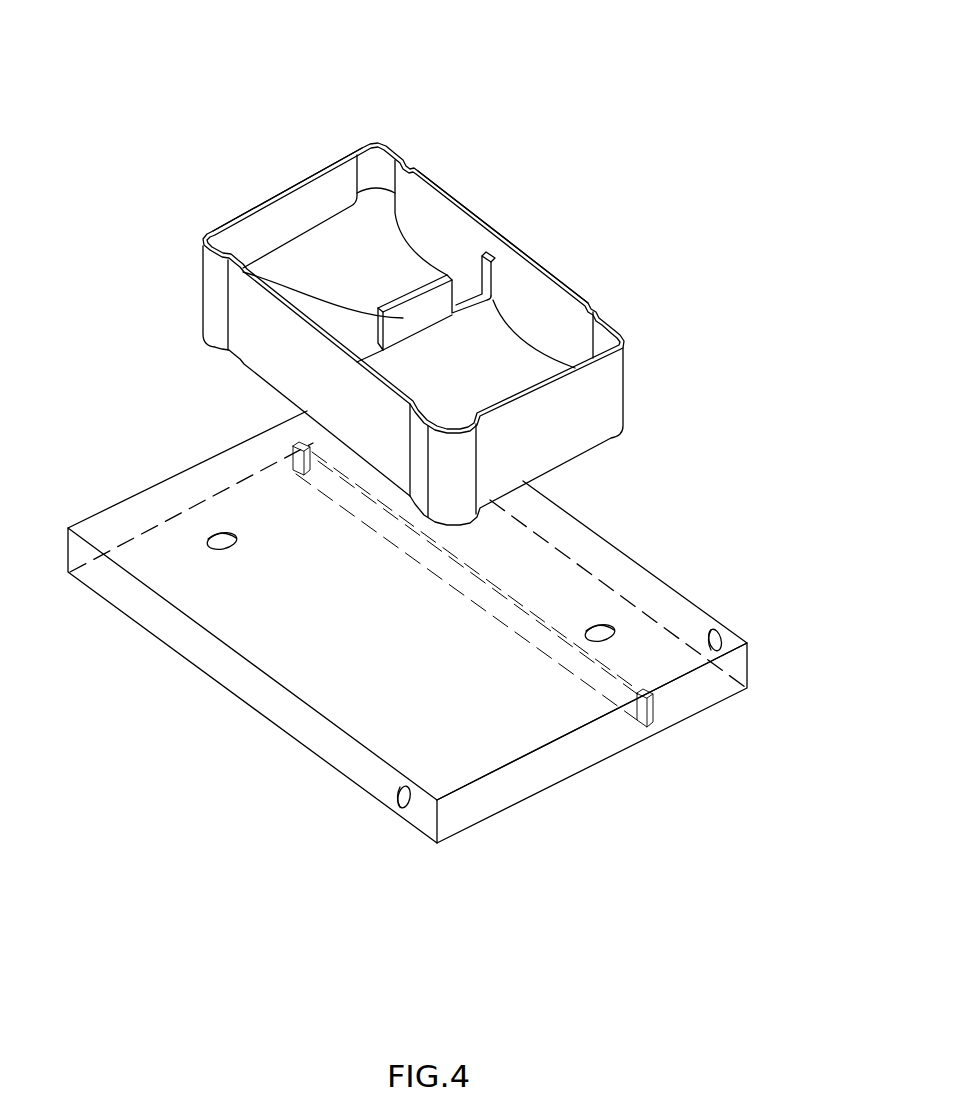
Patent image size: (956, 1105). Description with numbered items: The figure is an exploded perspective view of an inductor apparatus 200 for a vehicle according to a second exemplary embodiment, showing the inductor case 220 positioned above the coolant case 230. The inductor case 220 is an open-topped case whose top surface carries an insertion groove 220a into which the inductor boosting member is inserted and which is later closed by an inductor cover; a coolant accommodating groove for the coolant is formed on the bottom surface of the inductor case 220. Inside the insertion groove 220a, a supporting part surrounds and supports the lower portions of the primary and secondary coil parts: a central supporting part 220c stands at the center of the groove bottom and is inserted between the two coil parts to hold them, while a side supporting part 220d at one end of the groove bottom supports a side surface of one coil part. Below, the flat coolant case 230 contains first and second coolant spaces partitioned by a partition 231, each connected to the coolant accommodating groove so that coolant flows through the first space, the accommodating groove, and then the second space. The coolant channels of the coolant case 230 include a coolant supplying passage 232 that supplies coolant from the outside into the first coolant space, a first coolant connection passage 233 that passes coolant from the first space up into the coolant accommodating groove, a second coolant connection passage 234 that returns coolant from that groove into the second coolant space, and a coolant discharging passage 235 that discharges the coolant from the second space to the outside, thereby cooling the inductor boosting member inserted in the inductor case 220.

The inductor apparatus 200 is at (580, 66).
The inductor case 220 is at (625, 383).
The insertion groove 220a is at (433, 232).
The central supporting part 220c is at (403, 318).
The side supporting part 220d is at (292, 237).
The coolant case 230 is at (497, 815).
The partition 231 is at (687, 702).
The coolant supplying passage 232 is at (398, 803).
The first coolant connection passage 233 is at (205, 543).
The second coolant connection passage 234 is at (615, 631).
The coolant discharging passage 235 is at (722, 640).